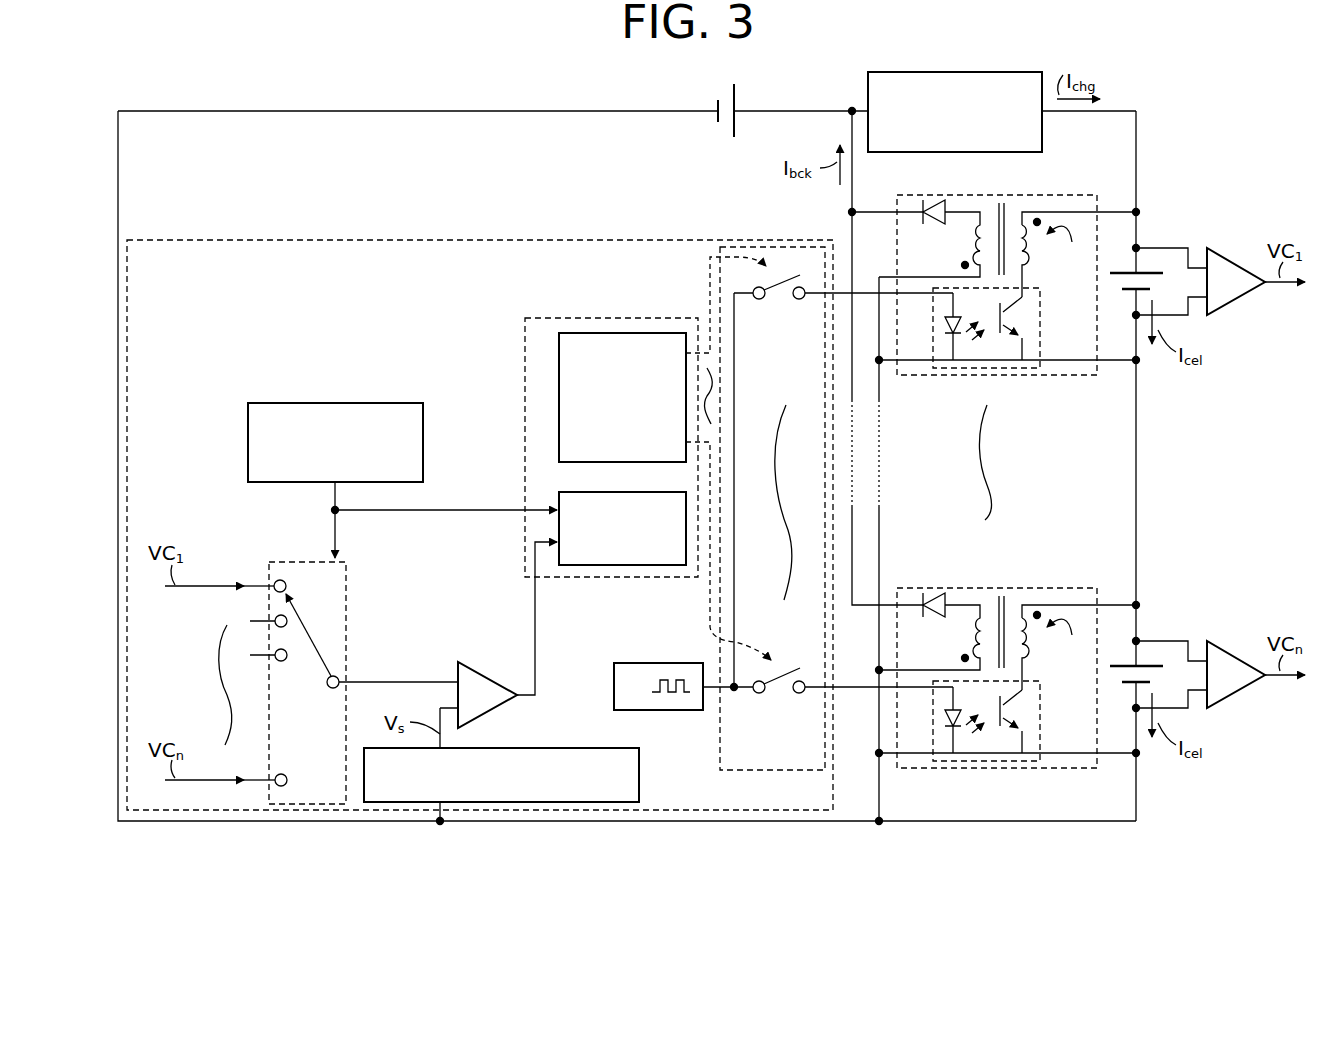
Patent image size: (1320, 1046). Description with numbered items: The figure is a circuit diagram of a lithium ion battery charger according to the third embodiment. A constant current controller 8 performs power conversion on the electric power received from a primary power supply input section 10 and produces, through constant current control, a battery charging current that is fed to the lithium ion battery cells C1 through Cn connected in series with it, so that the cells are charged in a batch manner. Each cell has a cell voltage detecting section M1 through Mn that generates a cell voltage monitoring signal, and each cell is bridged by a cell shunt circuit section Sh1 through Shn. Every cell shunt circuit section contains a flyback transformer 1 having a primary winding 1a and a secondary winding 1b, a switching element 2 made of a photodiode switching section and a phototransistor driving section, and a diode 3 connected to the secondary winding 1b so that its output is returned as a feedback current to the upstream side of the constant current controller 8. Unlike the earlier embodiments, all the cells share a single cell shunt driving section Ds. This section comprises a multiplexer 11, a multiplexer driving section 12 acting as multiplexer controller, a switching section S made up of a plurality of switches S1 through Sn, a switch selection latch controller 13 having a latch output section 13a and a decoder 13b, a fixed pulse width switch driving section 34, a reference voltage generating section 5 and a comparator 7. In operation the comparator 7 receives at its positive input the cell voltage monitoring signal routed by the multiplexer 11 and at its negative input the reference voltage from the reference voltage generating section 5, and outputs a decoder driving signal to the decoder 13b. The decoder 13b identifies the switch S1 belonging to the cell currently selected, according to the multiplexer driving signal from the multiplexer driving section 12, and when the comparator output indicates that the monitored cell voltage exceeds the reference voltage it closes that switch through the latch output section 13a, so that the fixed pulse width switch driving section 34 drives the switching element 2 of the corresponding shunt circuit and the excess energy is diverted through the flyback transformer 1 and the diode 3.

The flyback transformer 1 is at (1004, 203).
The primary winding 1a is at (1030, 250).
The secondary winding 1b is at (973, 208).
The switching element 2 is at (1040, 330).
The diode 3 is at (937, 227).
The reference voltage generating section 5 is at (641, 785).
The comparator 7 is at (497, 672).
The constant current controller 8 is at (865, 86).
The primary power supply input section 10 is at (721, 98).
The multiplexer 11 is at (282, 560).
The multiplexer driving section 12 is at (365, 403).
The switch selection latch controller 13 is at (607, 318).
The latch output section 13a is at (559, 417).
The decoder 13b is at (559, 500).
The fixed pulse width switch driving section 34 is at (665, 663).
The switching section S is at (750, 512).
The switch S1 is at (781, 305).
The switch Sn is at (781, 700).
The cell shunt driving section Ds is at (497, 239).
The cell shunt circuit section Sh1 is at (1080, 185).
The cell shunt circuit section Shn is at (1080, 578).
The lithium ion battery cell C1 is at (1150, 270).
The lithium ion battery cell Cn is at (1150, 663).
The cell voltage detecting section M1 is at (1240, 300).
The cell voltage detecting section Mn is at (1240, 693).